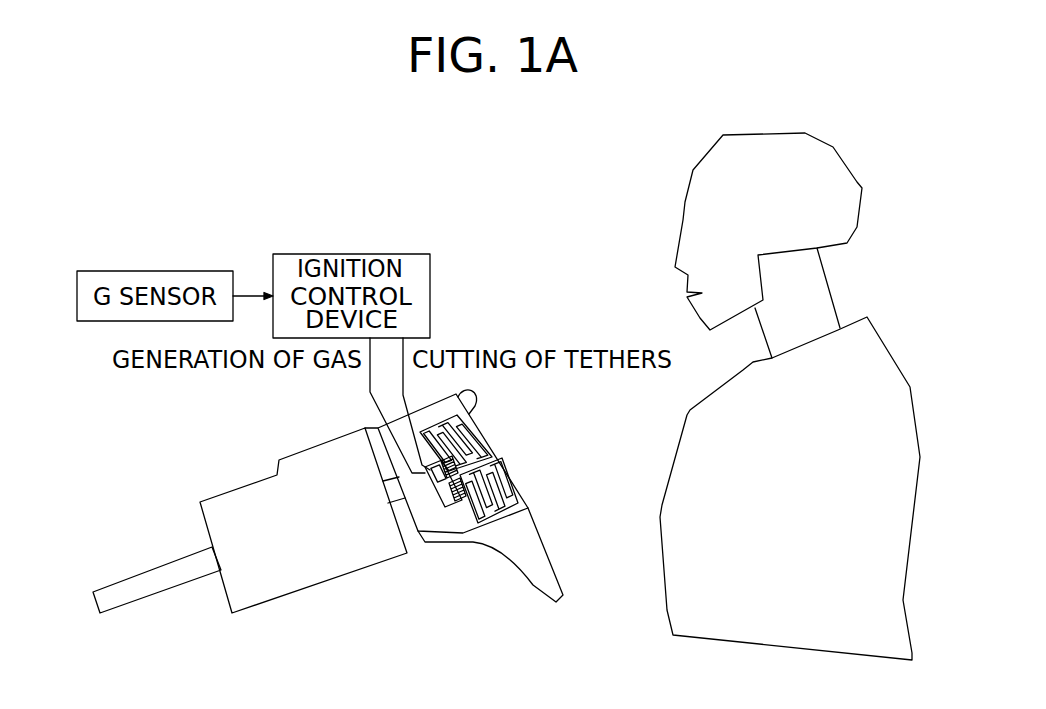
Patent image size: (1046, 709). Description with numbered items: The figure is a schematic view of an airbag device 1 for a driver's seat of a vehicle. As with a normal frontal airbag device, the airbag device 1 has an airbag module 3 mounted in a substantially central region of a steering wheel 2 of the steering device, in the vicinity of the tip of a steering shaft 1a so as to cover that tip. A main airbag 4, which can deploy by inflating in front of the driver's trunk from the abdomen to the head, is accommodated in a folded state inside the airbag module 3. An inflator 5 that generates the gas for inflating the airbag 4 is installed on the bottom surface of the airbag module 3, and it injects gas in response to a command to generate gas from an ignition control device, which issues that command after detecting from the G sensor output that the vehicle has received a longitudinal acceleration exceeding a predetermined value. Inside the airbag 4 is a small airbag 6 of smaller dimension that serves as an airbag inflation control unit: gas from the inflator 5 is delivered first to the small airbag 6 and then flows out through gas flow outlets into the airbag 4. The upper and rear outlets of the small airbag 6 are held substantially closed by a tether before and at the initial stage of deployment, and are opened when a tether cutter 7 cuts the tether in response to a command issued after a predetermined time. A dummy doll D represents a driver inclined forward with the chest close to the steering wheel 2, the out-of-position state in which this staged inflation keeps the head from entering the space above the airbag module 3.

The airbag device 1 is at (515, 307).
The steering shaft 1a is at (173, 558).
The steering wheel 2 is at (550, 551).
The airbag module 3 is at (502, 463).
The airbag 4 is at (497, 452).
The inflator 5 is at (438, 494).
The small airbag 6 is at (452, 497).
The tether cutter 7 is at (439, 483).
The dummy doll D is at (669, 207).